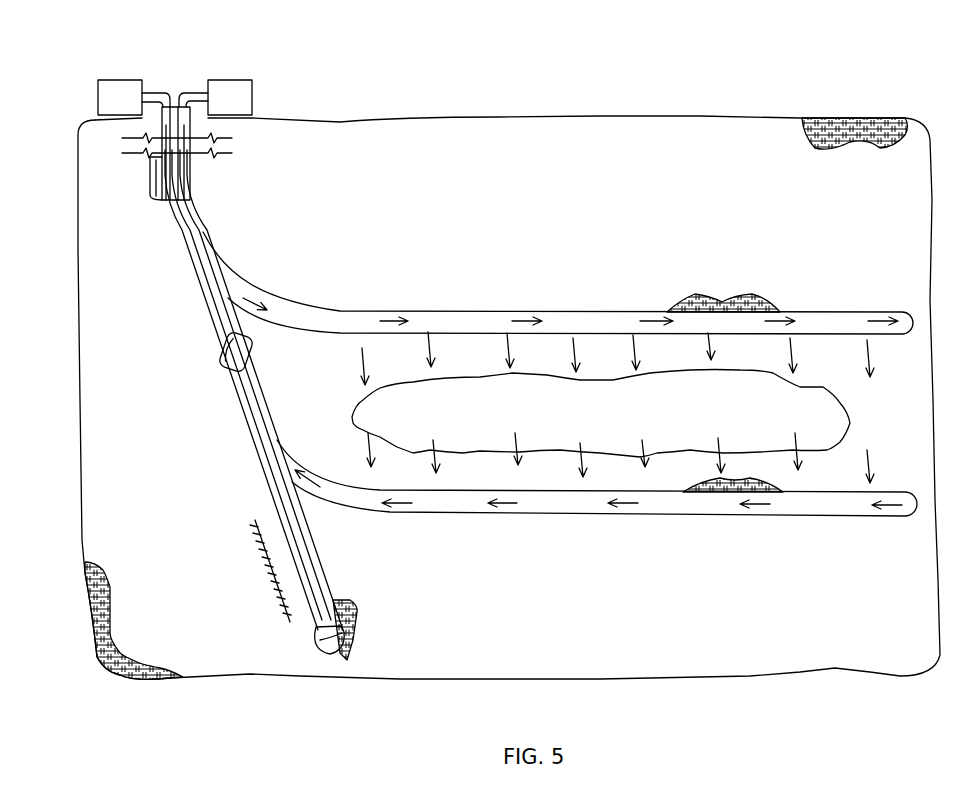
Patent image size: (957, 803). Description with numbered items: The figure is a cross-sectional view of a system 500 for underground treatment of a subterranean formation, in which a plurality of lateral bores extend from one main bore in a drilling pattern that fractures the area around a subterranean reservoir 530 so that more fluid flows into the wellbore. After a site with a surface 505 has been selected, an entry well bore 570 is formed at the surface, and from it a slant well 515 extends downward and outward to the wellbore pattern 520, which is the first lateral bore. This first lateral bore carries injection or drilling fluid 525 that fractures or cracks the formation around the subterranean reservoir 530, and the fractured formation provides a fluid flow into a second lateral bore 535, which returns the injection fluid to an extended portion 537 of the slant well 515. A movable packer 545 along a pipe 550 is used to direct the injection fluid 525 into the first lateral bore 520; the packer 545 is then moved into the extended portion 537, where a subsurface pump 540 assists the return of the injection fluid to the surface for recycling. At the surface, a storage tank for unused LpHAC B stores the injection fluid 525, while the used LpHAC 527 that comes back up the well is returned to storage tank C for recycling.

The system 500 is at (549, 86).
The surface 505 is at (358, 120).
The slant well 515 is at (200, 215).
The wellbore pattern 520 is at (375, 312).
The injection or drilling fluid 525 is at (525, 318).
The used LpHAC 527 is at (625, 505).
The subterranean reservoir 530 is at (826, 387).
The second lateral bore 535 is at (490, 515).
The extended portion of the slant well 537 is at (318, 530).
The subsurface pump 540 is at (318, 638).
The movable packer 545 is at (228, 352).
The pipe 550 is at (195, 243).
The entry well bore 570 is at (193, 170).
The storage tank for unused LpHAC B is at (238, 78).
The storage tank C is at (110, 80).